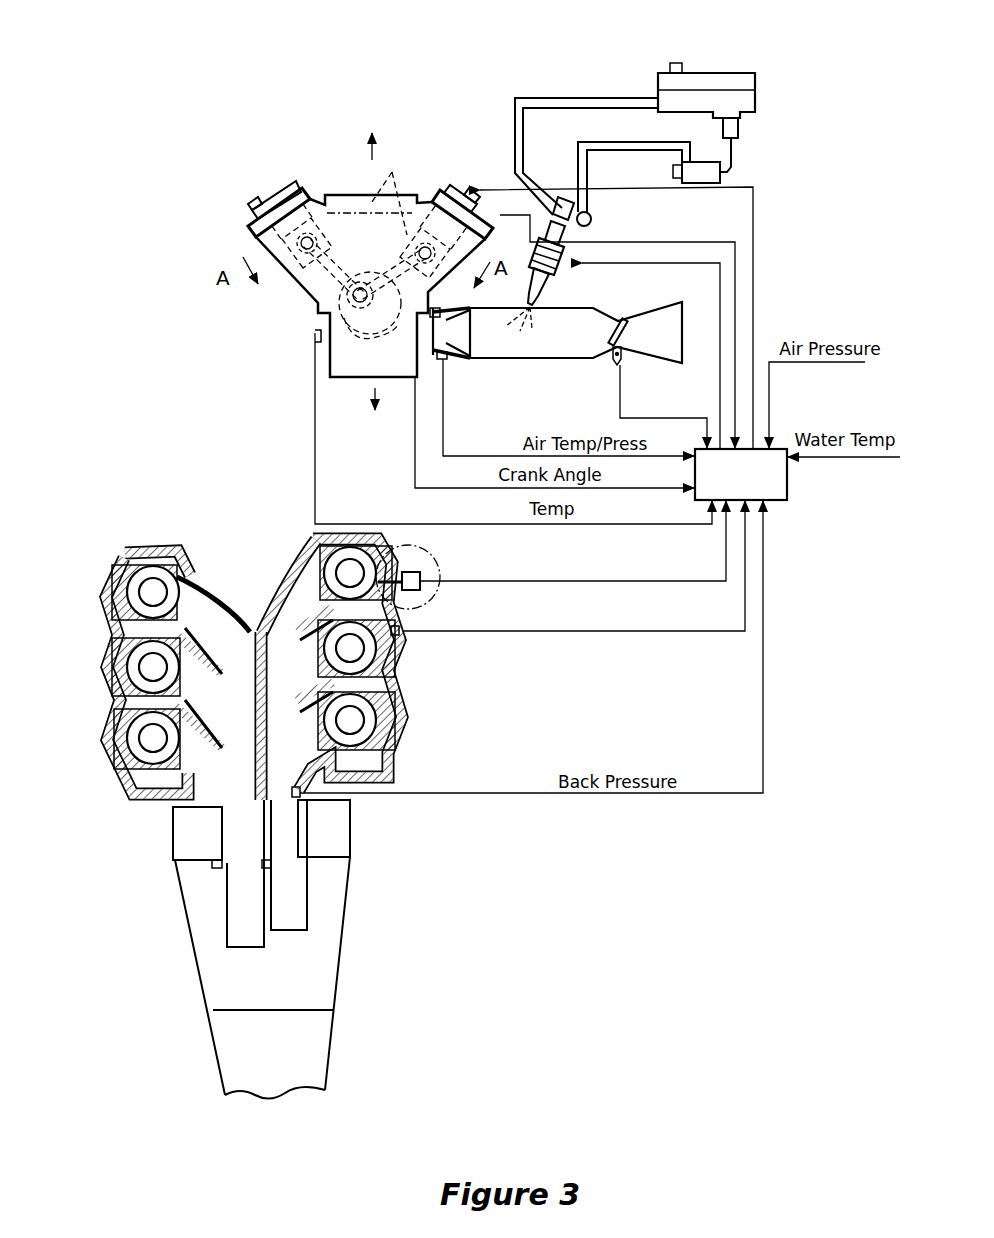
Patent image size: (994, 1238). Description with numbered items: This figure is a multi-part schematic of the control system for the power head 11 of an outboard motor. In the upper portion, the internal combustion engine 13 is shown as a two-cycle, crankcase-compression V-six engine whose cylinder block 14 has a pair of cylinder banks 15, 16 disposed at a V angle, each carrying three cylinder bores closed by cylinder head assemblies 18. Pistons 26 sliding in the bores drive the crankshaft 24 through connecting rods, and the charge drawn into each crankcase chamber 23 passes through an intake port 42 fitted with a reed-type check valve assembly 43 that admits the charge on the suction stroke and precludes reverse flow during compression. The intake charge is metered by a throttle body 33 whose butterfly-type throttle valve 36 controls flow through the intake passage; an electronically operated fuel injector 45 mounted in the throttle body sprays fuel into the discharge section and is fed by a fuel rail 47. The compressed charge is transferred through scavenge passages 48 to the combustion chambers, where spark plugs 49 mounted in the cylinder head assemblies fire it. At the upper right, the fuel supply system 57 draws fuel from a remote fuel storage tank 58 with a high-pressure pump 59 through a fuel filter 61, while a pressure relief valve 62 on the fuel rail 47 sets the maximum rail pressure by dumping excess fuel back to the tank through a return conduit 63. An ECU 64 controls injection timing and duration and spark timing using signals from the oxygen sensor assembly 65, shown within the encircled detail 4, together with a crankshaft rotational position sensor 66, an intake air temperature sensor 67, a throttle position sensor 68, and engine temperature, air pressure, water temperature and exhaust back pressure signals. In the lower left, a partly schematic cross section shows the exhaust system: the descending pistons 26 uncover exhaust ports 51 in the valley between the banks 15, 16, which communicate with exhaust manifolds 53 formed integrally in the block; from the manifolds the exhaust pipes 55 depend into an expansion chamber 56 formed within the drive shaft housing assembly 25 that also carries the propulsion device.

The exhaust system 4 is at (438, 598).
The power head 11 is at (463, 915).
The internal combustion engine 13 is at (350, 140).
The cylinder block 14 is at (322, 316).
The cylinder bank 15 is at (286, 290).
The cylinder bank 16 is at (448, 278).
The cylinder head assembly 18 is at (441, 188).
The crankcase chamber 23 is at (340, 350).
The crankshaft 24 is at (362, 330).
The drive shaft housing assembly 25 is at (332, 1072).
The piston 26 is at (391, 184).
The throttle body 33 is at (528, 358).
The throttle valve 36 is at (630, 327).
The intake port 42 is at (447, 354).
The reed-type check valve assembly 43 is at (463, 312).
The fuel injector 45 is at (583, 268).
The fuel rail 47 is at (590, 216).
The scavenge passage 48 is at (107, 573).
The spark plug 49 is at (264, 195).
The exhaust port 51 is at (277, 582).
The exhaust manifold 53 is at (262, 782).
The exhaust pipes 55 is at (267, 952).
The expansion chamber 56 is at (337, 890).
The fuel supply system 57 is at (790, 82).
The fuel storage tank 58 is at (737, 73).
The high-pressure pump 59 is at (722, 173).
The fuel filter 61 is at (740, 128).
The pressure relief valve 62 is at (564, 196).
The return conduit 63 is at (596, 97).
The ECU 64 is at (787, 488).
The oxygen sensor assembly 65 is at (420, 572).
The crankshaft rotational position sensor 66 is at (387, 377).
The intake air temperature sensor 67 is at (448, 358).
The throttle position sensor 68 is at (613, 363).